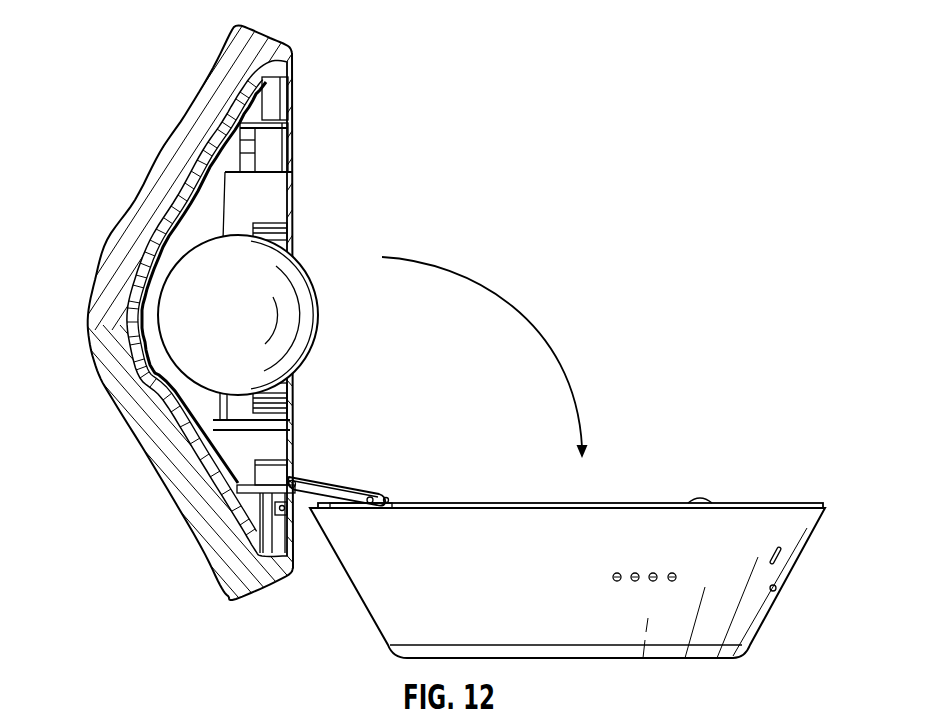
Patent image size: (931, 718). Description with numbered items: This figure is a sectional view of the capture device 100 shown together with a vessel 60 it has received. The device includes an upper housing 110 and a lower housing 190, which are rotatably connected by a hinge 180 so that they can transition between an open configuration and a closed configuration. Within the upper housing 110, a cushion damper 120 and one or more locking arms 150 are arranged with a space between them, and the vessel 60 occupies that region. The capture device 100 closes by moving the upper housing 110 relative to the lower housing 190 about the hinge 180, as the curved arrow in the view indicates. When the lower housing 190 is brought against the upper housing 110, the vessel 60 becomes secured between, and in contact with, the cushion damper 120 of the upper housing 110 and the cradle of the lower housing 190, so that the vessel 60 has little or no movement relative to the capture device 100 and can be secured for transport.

The capture device 100 is at (114, 37).
The upper housing 110 is at (197, 86).
The cushion damper 120 is at (203, 233).
The locking arm 150 is at (287, 217).
The vessel 60 is at (320, 300).
The hinge 180 is at (382, 492).
The lower housing 190 is at (798, 503).